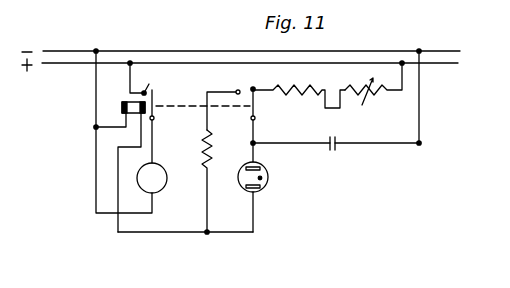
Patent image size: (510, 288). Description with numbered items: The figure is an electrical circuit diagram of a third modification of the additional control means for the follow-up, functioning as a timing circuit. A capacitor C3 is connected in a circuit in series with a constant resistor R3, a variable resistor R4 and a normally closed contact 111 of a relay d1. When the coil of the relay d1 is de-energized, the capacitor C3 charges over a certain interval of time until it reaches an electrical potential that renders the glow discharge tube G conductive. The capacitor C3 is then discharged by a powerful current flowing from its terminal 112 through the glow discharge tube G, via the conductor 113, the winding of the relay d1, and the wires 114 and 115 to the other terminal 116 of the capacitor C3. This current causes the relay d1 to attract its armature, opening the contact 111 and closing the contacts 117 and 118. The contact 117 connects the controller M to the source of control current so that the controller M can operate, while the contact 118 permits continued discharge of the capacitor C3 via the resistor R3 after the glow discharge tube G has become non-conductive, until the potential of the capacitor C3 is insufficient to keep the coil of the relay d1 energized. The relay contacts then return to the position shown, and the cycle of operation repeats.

The normally closed contact 111 is at (256, 90).
The terminal of the capacitor 112 is at (255, 142).
The discharge path conductor 113 is at (175, 235).
The wire 114 is at (95, 103).
The wire 115 is at (427, 110).
The other terminal of the capacitor 116 is at (421, 143).
The contact 117 is at (148, 89).
The contact 118 is at (238, 91).
The relay d1 is at (126, 104).
The constant resistor R3 is at (273, 158).
The variable resistor R4 is at (373, 87).
The capacitor C3 is at (332, 154).
The controller M is at (152, 178).
The glow discharge tube G is at (262, 188).